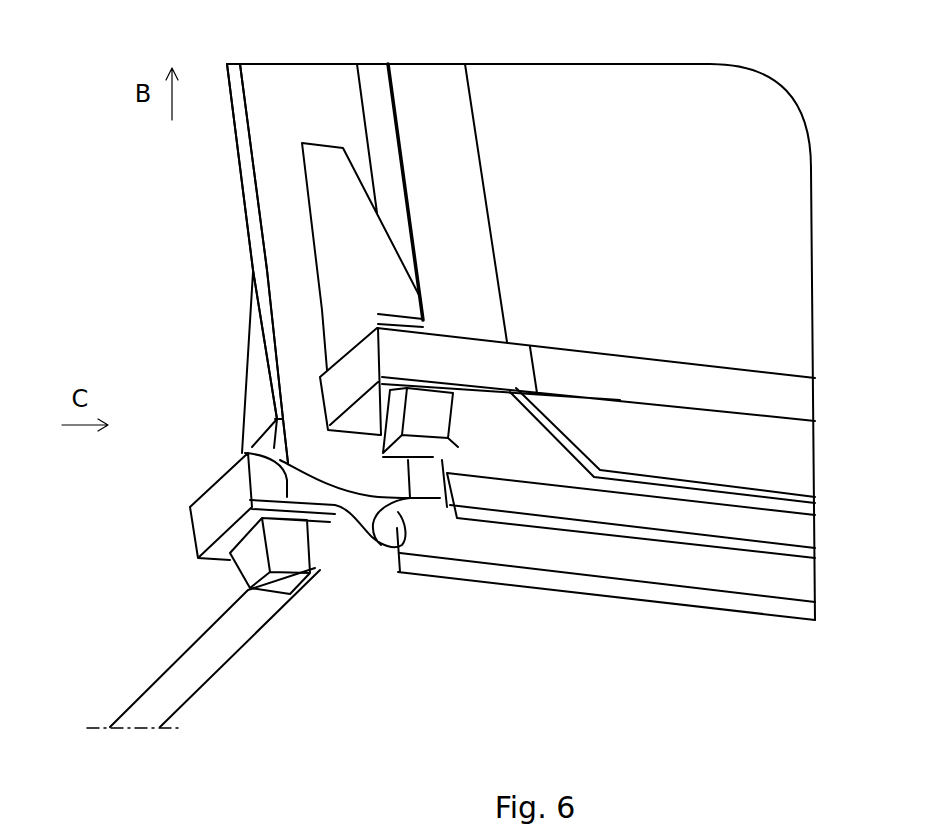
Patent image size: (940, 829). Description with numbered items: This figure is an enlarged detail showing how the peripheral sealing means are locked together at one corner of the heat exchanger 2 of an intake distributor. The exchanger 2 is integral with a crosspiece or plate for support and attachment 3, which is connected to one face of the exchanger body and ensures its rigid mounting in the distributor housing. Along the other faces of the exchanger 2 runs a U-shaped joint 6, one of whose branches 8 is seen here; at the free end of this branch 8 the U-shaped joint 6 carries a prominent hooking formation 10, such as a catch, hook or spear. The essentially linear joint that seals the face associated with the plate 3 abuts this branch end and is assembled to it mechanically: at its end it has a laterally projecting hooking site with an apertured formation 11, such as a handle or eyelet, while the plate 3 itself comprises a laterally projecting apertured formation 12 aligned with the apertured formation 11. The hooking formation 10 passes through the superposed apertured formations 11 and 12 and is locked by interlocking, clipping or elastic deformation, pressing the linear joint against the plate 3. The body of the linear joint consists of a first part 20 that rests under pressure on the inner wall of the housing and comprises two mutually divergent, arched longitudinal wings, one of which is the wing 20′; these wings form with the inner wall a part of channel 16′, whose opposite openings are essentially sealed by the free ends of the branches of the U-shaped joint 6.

The heat exchanger 2 is at (700, 108).
The crosspiece or plate for support and attachment 3 is at (760, 400).
The U-shaped joint 6 is at (275, 148).
The branch of the U-shaped joint 8 is at (228, 263).
The prominent hooking formation 10 is at (427, 410).
The apertured formation of the linear joint 11 is at (311, 525).
The apertured formation of the crosspiece 12 is at (327, 523).
The channel 16′ is at (790, 594).
The first part of the linear joint body 20 is at (560, 672).
The longitudinal wing 20′ is at (560, 580).